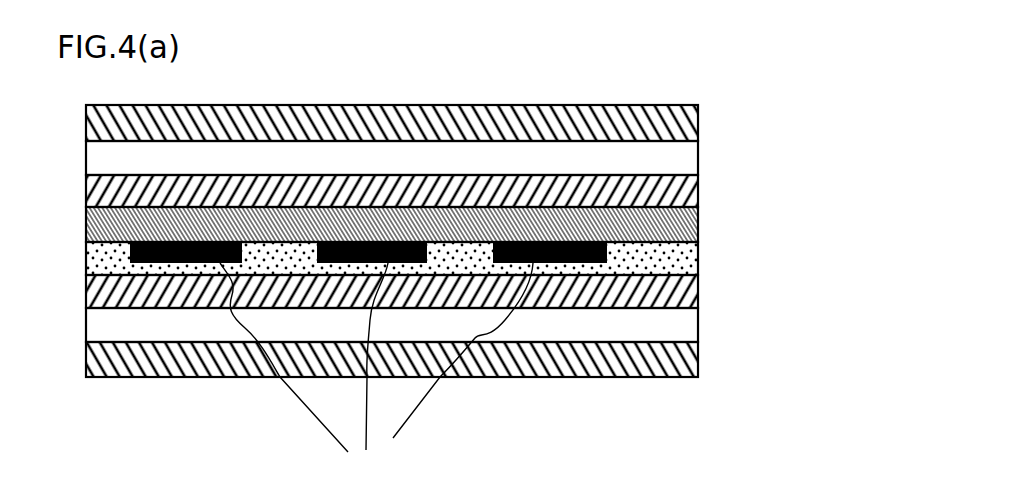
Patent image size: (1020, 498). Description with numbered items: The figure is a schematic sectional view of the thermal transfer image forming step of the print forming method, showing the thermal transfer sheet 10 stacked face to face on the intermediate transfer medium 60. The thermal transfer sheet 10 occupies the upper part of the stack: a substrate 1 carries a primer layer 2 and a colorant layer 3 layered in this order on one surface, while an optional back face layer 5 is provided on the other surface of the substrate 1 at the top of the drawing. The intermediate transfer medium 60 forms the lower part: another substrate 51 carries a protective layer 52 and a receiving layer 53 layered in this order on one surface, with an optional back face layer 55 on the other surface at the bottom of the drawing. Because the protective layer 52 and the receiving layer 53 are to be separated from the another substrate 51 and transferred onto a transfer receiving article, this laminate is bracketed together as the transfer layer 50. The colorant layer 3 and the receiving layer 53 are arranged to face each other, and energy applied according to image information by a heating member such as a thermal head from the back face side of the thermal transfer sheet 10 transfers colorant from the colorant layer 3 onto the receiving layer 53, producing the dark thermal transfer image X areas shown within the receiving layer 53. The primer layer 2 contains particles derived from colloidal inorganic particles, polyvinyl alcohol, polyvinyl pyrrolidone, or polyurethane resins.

The thermal transfer sheet 10 is at (634, 78).
The back face layer 5 is at (672, 113).
The substrate 1 is at (672, 150).
The primer layer 2 is at (672, 187).
The colorant layer 3 is at (672, 217).
The transfer layer 50 is at (801, 231).
The receiving layer 53 is at (672, 258).
The protective layer 52 is at (672, 293).
The another substrate 51 is at (672, 328).
The back face layer 55 is at (672, 362).
The intermediate transfer medium 60 is at (655, 387).